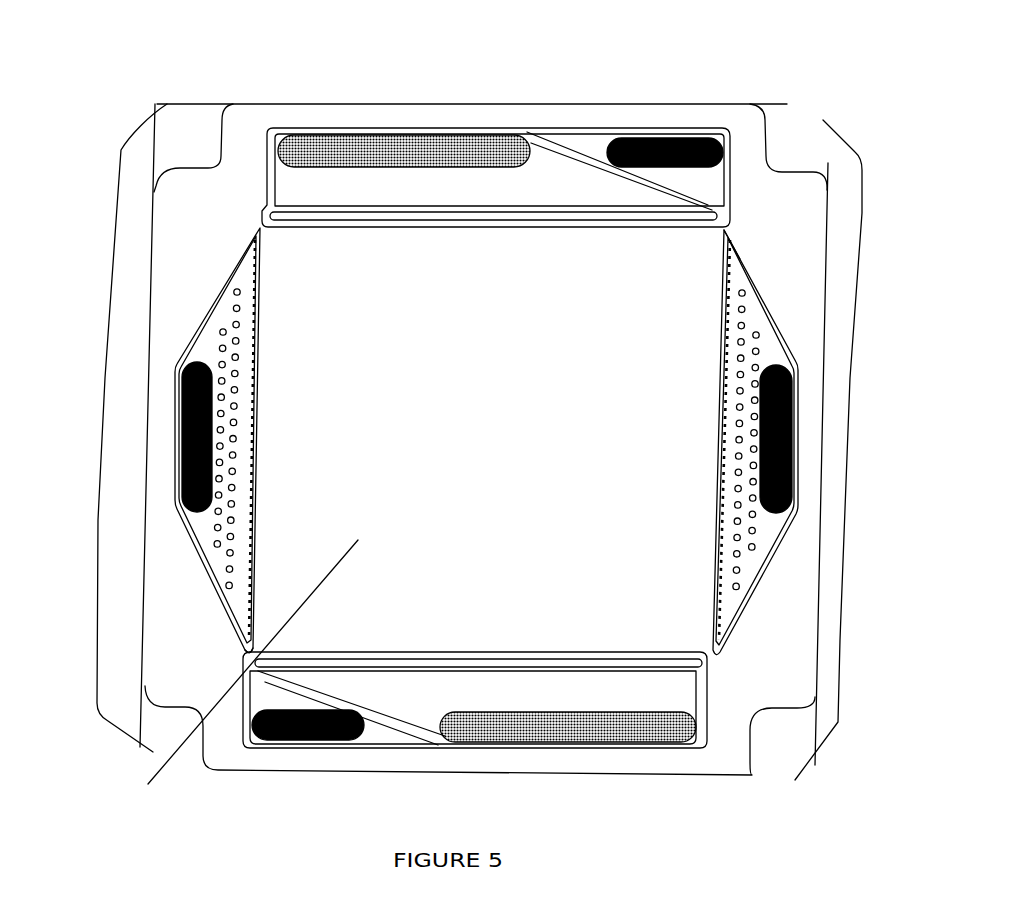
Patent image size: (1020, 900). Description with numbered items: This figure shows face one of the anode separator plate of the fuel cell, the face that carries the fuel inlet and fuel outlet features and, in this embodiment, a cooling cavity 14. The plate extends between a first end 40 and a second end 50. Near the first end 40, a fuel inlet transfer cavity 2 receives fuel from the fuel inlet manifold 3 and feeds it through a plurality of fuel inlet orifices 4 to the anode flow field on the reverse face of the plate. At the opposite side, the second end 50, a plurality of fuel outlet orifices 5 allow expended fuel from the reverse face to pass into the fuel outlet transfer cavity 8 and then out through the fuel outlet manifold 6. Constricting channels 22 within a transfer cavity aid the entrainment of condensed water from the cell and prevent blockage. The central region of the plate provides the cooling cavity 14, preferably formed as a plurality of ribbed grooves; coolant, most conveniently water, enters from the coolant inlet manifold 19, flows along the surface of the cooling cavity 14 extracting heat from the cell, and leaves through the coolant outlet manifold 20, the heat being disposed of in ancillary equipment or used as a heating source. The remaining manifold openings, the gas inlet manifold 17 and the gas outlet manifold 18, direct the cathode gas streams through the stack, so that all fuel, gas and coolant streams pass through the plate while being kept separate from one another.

The fuel inlet transfer cavity 2 is at (763, 527).
The fuel inlet manifold 3 is at (790, 458).
The fuel inlet orifices 4 is at (727, 253).
The fuel outlet orifices 5 is at (240, 655).
The fuel outlet manifold 6 is at (182, 468).
The fuel outlet transfer cavity 8 is at (217, 558).
The cooling cavity 14 is at (234, 688).
The gas inlet manifold 17 is at (652, 742).
The gas outlet manifold 18 is at (373, 142).
The coolant inlet manifold 19 is at (292, 740).
The coolant outlet manifold 20 is at (672, 143).
The constricting channels 22 is at (755, 353).
The first end 40 is at (850, 422).
The second end 50 is at (102, 393).